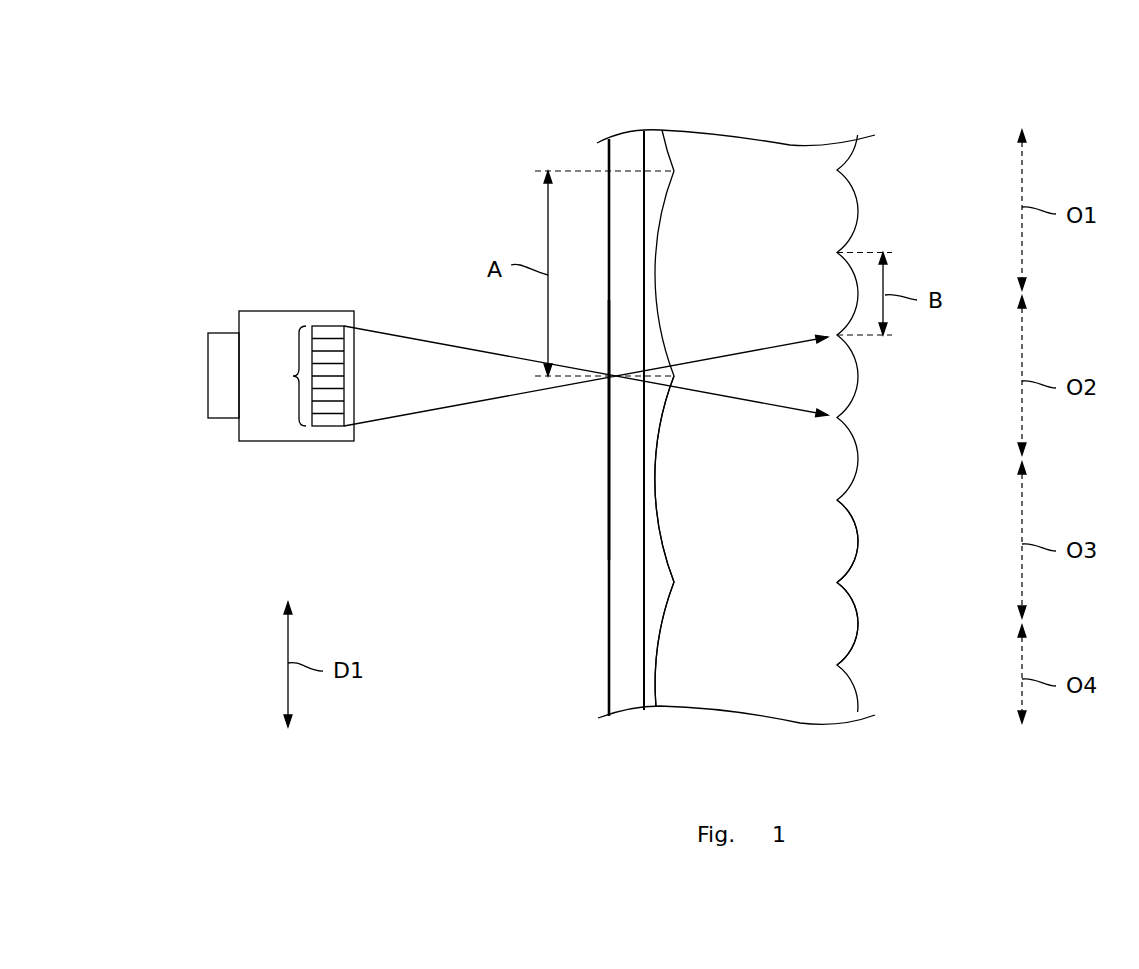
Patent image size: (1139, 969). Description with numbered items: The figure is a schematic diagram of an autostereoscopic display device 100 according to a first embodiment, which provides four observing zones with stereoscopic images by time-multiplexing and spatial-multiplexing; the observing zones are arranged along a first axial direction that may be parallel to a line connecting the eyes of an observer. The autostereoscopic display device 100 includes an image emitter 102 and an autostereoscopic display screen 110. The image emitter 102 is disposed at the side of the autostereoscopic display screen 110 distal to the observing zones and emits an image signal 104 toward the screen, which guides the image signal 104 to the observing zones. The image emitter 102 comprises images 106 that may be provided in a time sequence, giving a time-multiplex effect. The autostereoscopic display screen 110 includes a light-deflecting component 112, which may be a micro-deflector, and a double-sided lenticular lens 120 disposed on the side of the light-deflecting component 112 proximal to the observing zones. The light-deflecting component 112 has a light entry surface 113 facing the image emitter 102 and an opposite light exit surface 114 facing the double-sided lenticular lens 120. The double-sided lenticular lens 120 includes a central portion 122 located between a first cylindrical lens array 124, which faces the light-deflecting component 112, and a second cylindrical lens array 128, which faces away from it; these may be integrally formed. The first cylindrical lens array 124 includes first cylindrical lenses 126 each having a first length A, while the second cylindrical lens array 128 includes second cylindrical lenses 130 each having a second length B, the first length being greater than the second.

The autostereoscopic display device 100 is at (232, 58).
The image emitter 102 is at (272, 310).
The image signal 104 is at (446, 333).
The images 106 is at (294, 376).
The autostereoscopic display screen 110 is at (787, 57).
The light-deflecting component 112 is at (629, 150).
The light entry surface 113 is at (601, 433).
The light exit surface 114 is at (655, 493).
The double-sided lenticular lens 120 is at (735, 168).
The central portion 122 is at (757, 678).
The first cylindrical lens array 124 is at (647, 619).
The first cylindrical lens 126 is at (670, 553).
The second cylindrical lens array 128 is at (850, 666).
The second cylindrical lens 130 is at (843, 620).